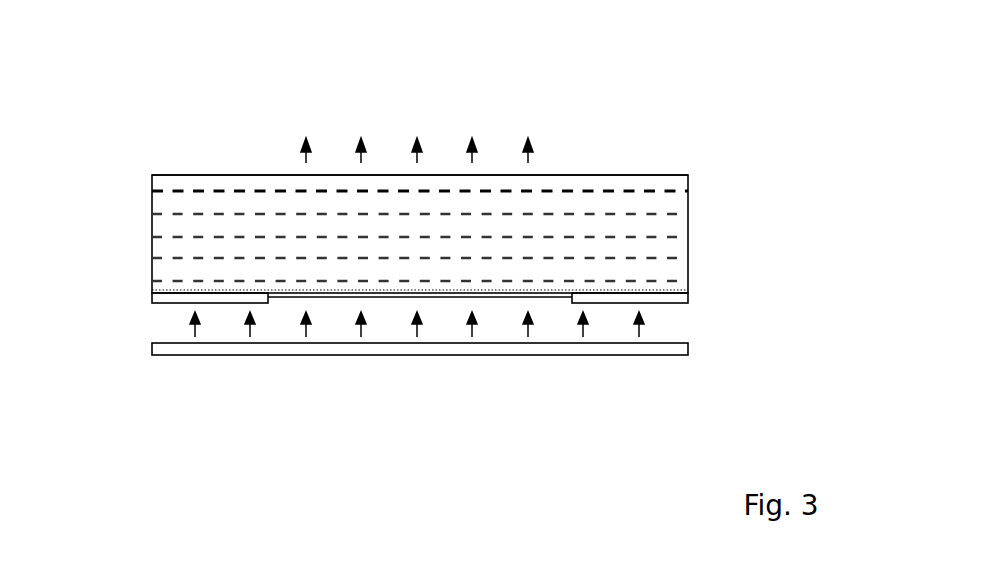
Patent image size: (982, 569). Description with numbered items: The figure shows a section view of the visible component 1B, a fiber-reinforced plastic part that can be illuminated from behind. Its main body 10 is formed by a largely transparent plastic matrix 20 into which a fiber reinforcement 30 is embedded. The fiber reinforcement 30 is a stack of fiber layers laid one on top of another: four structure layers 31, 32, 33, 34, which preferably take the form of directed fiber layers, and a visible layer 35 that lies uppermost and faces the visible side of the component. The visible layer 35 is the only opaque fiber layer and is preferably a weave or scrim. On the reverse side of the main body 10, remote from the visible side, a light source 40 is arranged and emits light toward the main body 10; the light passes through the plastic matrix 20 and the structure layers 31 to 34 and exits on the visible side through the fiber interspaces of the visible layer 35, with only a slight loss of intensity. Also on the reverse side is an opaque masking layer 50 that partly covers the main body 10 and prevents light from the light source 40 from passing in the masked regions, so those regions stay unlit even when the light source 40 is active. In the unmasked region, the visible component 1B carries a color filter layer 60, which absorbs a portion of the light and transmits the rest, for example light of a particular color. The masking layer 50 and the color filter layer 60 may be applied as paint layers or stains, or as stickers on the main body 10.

The visible component 1B is at (634, 87).
The main body 10 is at (122, 226).
The plastic matrix 20 is at (243, 183).
The fiber reinforcement 30 is at (763, 142).
The structure layer 31 is at (673, 298).
The structure layer 32 is at (680, 258).
The structure layer 33 is at (680, 236).
The structure layer 34 is at (680, 213).
The visible layer 35 is at (680, 191).
The light source 40 is at (658, 348).
The masking layer 50 is at (159, 297).
The color filter layer 60 is at (297, 295).